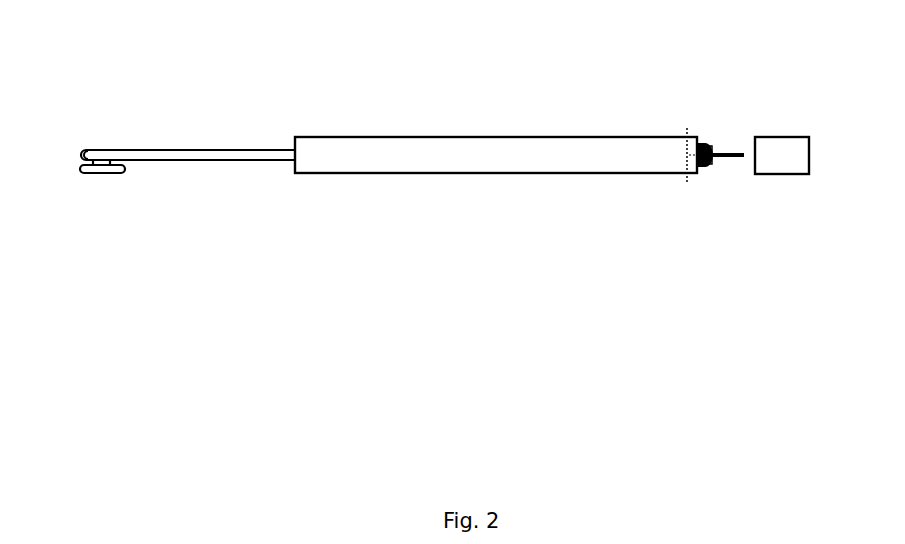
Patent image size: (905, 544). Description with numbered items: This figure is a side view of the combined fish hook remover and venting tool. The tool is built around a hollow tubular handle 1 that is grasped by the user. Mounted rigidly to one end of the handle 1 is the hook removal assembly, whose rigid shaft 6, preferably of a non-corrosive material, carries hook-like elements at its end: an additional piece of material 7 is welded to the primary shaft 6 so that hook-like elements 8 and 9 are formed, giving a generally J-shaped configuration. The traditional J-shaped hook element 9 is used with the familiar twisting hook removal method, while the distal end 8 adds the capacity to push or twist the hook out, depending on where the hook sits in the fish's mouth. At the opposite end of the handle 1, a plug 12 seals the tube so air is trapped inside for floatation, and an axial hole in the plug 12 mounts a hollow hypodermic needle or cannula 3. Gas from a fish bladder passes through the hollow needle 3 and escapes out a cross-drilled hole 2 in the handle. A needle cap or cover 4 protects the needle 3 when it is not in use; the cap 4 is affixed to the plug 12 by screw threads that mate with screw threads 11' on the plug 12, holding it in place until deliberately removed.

The handle 1 is at (642, 150).
The cross-drilled hole 2 is at (687, 137).
The hollow hypodermic needle 3 is at (730, 150).
The needle cap 4 is at (800, 162).
The rigid shaft 6 is at (195, 150).
The additional piece of material 7 is at (82, 173).
The distal end hook-like element 8 is at (93, 161).
The J-shaped hook-like element 9 is at (115, 165).
The screw threads on plug 11' is at (742, 94).
The plug 12 is at (713, 165).